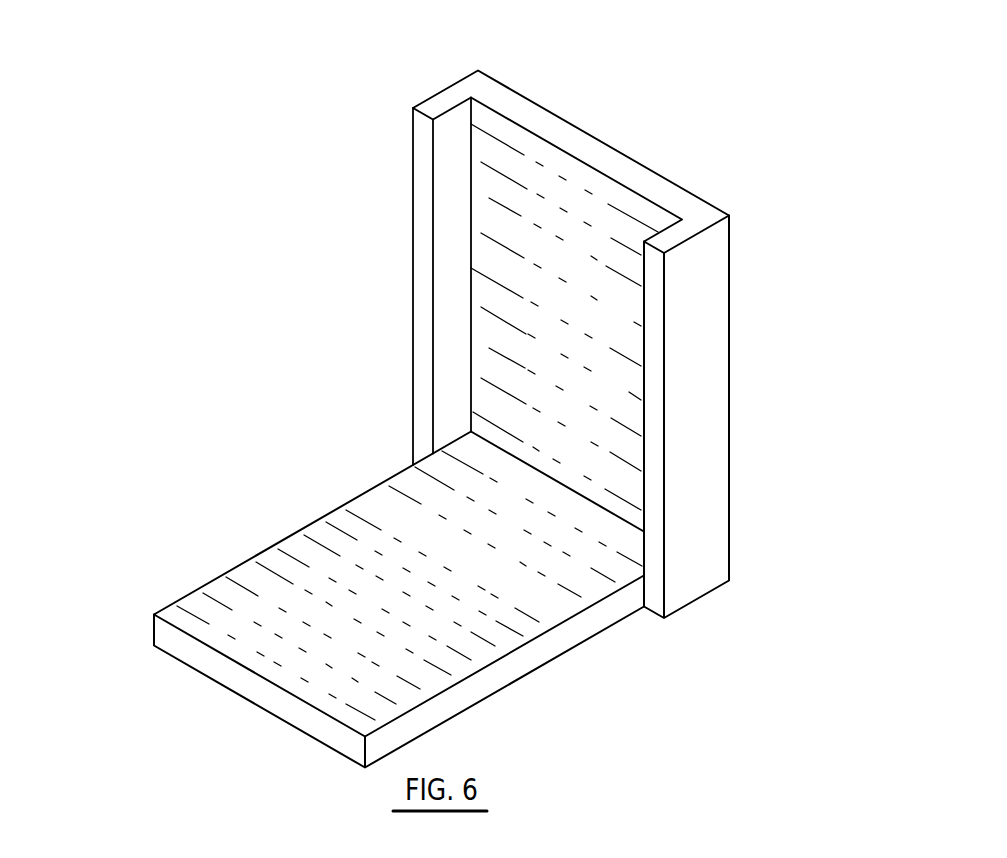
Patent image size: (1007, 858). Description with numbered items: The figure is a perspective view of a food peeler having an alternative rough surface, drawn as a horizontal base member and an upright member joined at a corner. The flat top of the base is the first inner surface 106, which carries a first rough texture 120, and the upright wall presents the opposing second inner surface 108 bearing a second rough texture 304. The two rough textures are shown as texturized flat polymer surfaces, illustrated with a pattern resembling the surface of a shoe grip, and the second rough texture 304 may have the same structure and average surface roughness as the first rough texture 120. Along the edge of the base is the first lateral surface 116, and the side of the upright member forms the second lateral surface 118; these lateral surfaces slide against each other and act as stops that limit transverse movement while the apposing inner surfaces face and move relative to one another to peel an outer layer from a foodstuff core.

The first inner surface 106 is at (227, 605).
The first rough texture 120 is at (336, 584).
The second inner surface 108 is at (590, 223).
The second rough texture 304 is at (565, 275).
The first lateral surface 116 is at (507, 675).
The second lateral surface 118 is at (448, 208).